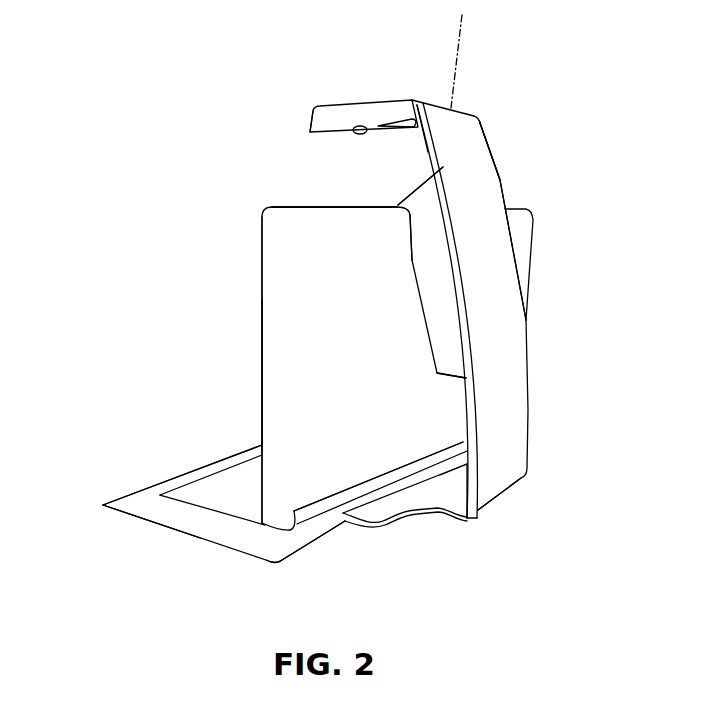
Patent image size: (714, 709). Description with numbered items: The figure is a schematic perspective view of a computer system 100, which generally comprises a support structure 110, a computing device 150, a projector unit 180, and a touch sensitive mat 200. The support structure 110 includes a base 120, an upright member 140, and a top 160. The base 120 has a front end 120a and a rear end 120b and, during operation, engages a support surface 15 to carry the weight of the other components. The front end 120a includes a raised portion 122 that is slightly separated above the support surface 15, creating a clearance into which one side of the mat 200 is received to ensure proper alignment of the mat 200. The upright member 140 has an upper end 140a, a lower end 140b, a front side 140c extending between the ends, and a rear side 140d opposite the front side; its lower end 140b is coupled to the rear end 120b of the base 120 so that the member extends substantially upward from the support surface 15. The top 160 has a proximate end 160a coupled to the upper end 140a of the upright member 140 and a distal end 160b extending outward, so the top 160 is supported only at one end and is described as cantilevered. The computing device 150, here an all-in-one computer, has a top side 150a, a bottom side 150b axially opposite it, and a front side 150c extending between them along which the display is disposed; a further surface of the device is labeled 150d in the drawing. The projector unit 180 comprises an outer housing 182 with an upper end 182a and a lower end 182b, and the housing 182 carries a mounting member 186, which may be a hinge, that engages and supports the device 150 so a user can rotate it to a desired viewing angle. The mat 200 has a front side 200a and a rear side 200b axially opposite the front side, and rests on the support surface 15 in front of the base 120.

The support surface 15 is at (83, 560).
The computer system 100 is at (123, 220).
The support structure 110 is at (577, 210).
The base 120 is at (408, 521).
The front end 120a is at (403, 476).
The rear end 120b is at (467, 521).
The raised portion 122 is at (347, 514).
The upright member 140 is at (500, 418).
The upper end 140a is at (477, 112).
The lower end 140b is at (497, 497).
The front side 140c is at (425, 153).
The rear side 140d is at (500, 181).
The computing device 150 is at (262, 226).
The top side 150a is at (330, 207).
The bottom side 150b is at (265, 528).
The front side 150c is at (261, 338).
The outer surface of side panel 150d is at (353, 302).
The top 160 is at (402, 90).
The proximate end 160a is at (545, 96).
The distal end 160b is at (308, 128).
The projector unit 180 is at (462, 297).
The outer housing 182 is at (450, 335).
The upper end 182a is at (443, 167).
The lower end 182b is at (447, 379).
The mounting member 186 is at (412, 233).
The touch sensitive mat 200 is at (139, 500).
The front side 200a is at (177, 478).
The rear side 200b is at (284, 561).